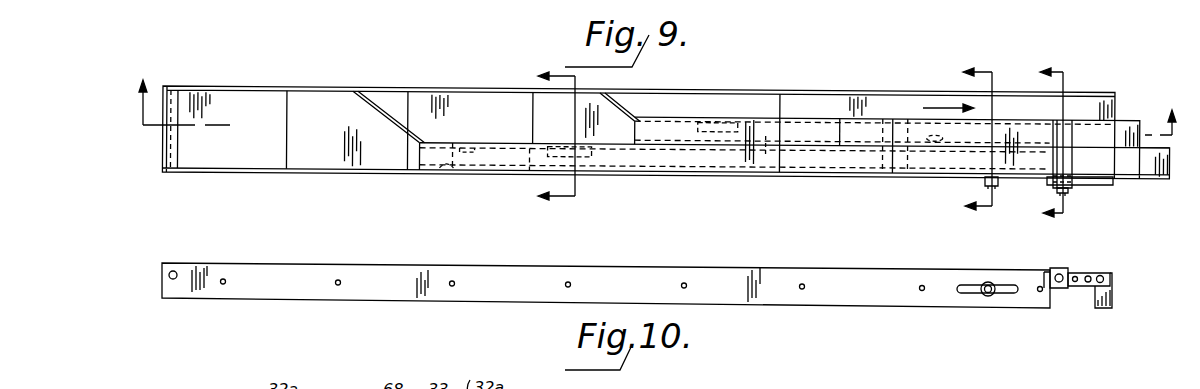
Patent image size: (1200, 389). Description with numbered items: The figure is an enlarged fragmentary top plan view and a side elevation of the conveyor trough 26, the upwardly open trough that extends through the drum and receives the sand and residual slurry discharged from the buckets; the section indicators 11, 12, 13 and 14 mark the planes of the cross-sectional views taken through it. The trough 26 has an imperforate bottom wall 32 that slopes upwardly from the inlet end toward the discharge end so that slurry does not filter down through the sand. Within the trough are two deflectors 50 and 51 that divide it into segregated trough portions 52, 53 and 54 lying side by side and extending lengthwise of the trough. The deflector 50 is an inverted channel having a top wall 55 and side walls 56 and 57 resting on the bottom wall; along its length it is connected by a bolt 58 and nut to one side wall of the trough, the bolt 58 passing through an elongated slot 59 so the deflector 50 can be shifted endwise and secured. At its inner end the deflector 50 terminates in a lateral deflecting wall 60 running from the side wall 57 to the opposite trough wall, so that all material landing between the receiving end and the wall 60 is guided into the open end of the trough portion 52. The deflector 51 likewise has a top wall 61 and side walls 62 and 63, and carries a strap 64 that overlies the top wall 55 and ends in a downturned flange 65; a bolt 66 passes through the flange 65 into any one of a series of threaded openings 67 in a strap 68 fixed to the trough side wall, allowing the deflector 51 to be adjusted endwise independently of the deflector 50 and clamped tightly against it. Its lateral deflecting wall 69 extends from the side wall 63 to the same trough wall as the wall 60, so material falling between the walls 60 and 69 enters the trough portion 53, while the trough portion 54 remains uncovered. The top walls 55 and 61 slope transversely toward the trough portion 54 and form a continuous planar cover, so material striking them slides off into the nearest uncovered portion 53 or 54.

In FIG. 9, the section line 11- 11 is at (657, 100).
In FIG. 9, the section line 12- 12 is at (541, 136).
In FIG. 9, the section line 13- 13 is at (963, 140).
In FIG. 9, the section line 14- 14 is at (1038, 142).
In FIG. 10, the trough 26 is at (825, 297).
In FIG. 9, the bottom wall 32 is at (666, 132).
In FIG. 9, the deflector 50 is at (672, 157).
In FIG. 9, the deflector 51 is at (848, 132).
In FIG. 9, the trough portion 52 is at (480, 162).
In FIG. 9, the trough portion 53 is at (768, 135).
In FIG. 9, the trough portion 54 is at (797, 105).
In FIG. 9, the top wall 55 is at (842, 158).
In FIG. 9, the side wall 56 is at (452, 170).
In FIG. 9, the side wall 57 is at (473, 142).
In FIG. 9, the bolt 58 is at (998, 188).
In FIG. 10, the bolt 58 is at (992, 283).
In FIG. 10, the elongated slot 59 is at (968, 293).
In FIG. 9, the lateral deflecting wall 60 is at (390, 112).
In FIG. 9, the top wall 61 is at (814, 130).
In FIG. 9, the side wall 62 is at (930, 140).
In FIG. 9, the side wall 63 is at (685, 115).
In FIG. 9, the strap 64 is at (1067, 138).
In FIG. 10, the downturned flange 65 is at (1053, 288).
In FIG. 9, the bolt 66 is at (1066, 194).
In FIG. 10, the bolt 66 is at (1058, 288).
In FIG. 10, the threaded openings 67 is at (1076, 274).
In FIG. 9, the strap 68 is at (1080, 186).
In FIG. 10, the strap 68 is at (1098, 297).
In FIG. 9, the lateral deflecting wall 69 is at (628, 112).